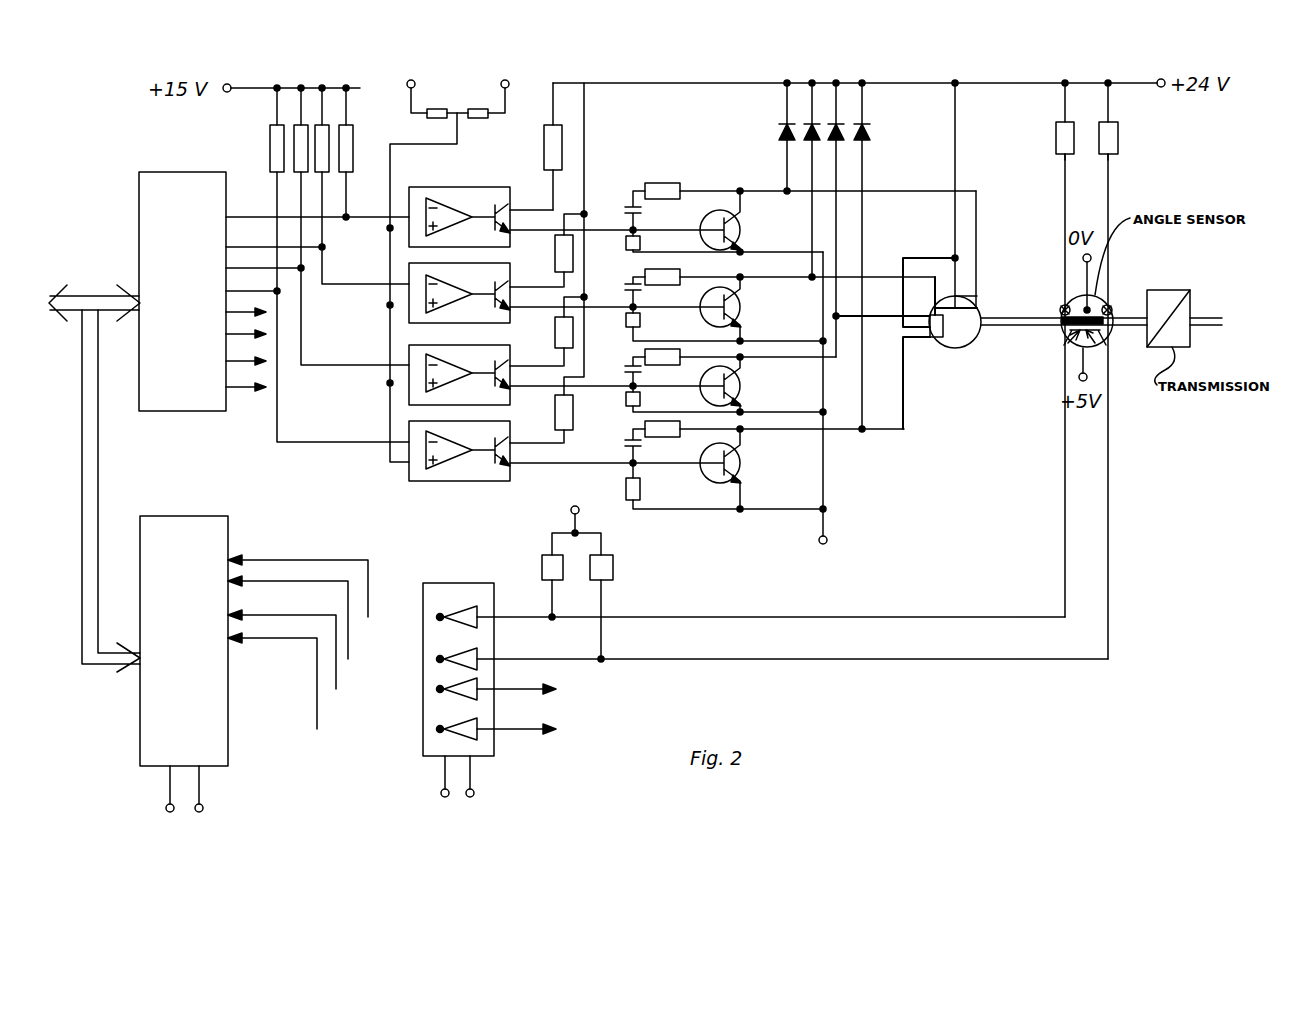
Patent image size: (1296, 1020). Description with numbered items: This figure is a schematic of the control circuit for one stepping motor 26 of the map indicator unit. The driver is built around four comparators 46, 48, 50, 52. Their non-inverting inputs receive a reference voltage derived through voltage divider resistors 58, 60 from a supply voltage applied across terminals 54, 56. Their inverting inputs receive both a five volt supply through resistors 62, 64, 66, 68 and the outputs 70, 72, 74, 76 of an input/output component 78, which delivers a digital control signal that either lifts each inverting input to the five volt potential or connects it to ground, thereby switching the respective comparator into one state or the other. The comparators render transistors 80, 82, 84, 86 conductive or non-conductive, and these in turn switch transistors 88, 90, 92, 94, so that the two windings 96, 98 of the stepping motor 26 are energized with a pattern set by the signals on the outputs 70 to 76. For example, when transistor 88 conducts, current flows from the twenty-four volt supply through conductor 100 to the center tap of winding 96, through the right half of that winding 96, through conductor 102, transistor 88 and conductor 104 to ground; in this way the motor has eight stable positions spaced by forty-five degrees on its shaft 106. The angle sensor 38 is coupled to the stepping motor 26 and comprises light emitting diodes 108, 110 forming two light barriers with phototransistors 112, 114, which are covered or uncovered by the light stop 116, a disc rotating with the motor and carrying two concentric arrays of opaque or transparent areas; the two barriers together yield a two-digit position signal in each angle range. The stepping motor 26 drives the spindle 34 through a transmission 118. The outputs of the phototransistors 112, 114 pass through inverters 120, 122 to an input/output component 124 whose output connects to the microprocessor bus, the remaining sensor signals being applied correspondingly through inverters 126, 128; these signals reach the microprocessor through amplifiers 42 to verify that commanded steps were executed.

The stepping motor 26 is at (974, 334).
The spindle 34 is at (1208, 317).
The angle sensor 38 is at (1110, 312).
The amplifiers 42 is at (423, 745).
The comparator 46 is at (432, 196).
The comparator 48 is at (480, 320).
The comparator 50 is at (413, 362).
The comparator 52 is at (408, 442).
The terminal 54 is at (503, 90).
The terminal 56 is at (408, 90).
The voltage divider resistor 58 is at (478, 109).
The voltage divider resistor 60 is at (437, 109).
The resistor 62 is at (332, 131).
The resistor 64 is at (354, 150).
The resistor 66 is at (294, 154).
The resistor 68 is at (270, 131).
The output 70 is at (248, 216).
The output 72 is at (256, 249).
The output 74 is at (256, 270).
The output 76 is at (256, 294).
The input/output component 78 is at (139, 199).
The transistor 80 is at (494, 204).
The transistor 82 is at (508, 284).
The transistor 84 is at (508, 366).
The transistor 86 is at (508, 436).
The transistor 88 is at (741, 222).
The transistor 90 is at (741, 299).
The transistor 92 is at (741, 378).
The transistor 94 is at (741, 455).
The winding 96 is at (975, 305).
The winding 98 is at (928, 342).
The conductor 100 is at (953, 165).
The conductor 102 is at (897, 191).
The conductor 104 is at (824, 490).
The shaft 106 is at (1004, 316).
The light emitting diode 108 is at (1060, 312).
The light emitting diode 110 is at (1108, 300).
The phototransistor 112 is at (1058, 368).
The phototransistor 114 is at (1102, 346).
The light stop 116 is at (1060, 346).
The transmission 118 is at (1162, 290).
The inverter 120 is at (459, 598).
The inverter 122 is at (480, 654).
The input/output component 124 is at (140, 739).
The inverter 126 is at (480, 689).
The inverter 128 is at (480, 724).